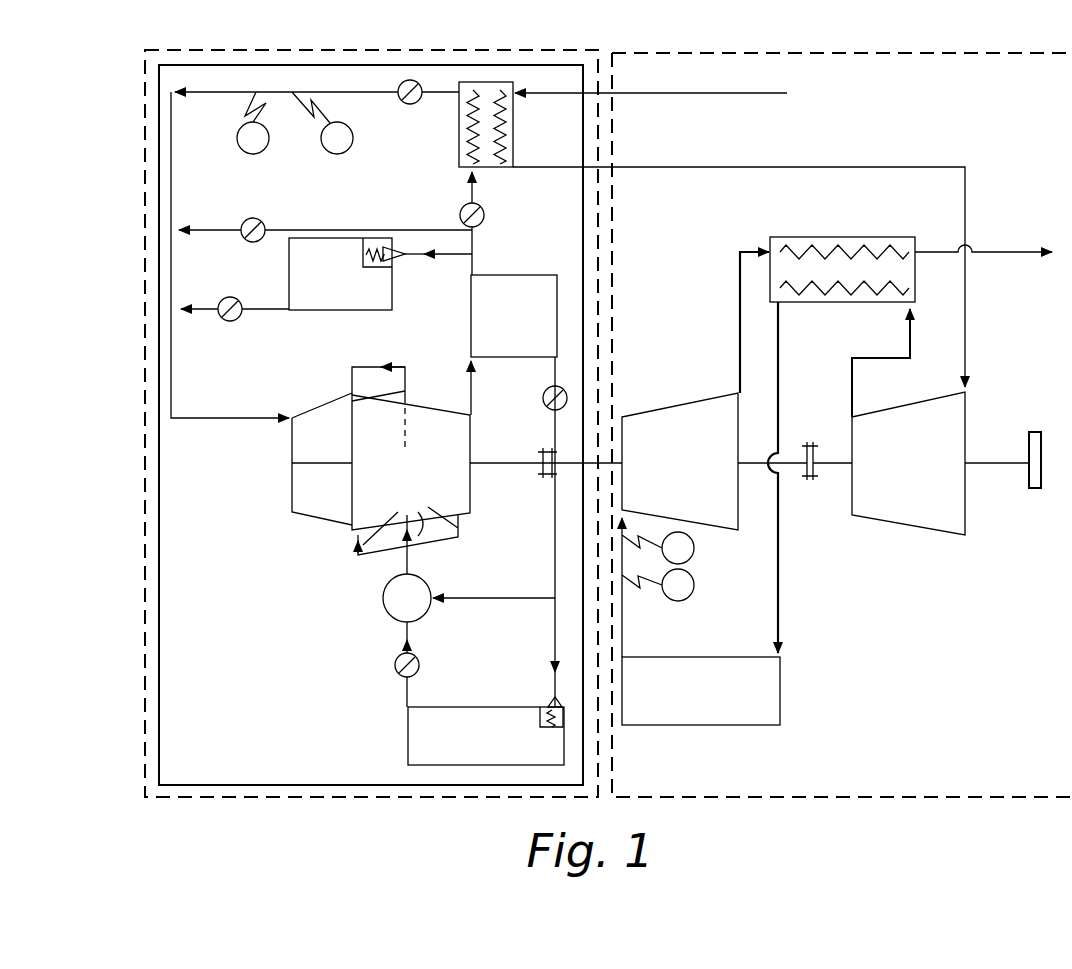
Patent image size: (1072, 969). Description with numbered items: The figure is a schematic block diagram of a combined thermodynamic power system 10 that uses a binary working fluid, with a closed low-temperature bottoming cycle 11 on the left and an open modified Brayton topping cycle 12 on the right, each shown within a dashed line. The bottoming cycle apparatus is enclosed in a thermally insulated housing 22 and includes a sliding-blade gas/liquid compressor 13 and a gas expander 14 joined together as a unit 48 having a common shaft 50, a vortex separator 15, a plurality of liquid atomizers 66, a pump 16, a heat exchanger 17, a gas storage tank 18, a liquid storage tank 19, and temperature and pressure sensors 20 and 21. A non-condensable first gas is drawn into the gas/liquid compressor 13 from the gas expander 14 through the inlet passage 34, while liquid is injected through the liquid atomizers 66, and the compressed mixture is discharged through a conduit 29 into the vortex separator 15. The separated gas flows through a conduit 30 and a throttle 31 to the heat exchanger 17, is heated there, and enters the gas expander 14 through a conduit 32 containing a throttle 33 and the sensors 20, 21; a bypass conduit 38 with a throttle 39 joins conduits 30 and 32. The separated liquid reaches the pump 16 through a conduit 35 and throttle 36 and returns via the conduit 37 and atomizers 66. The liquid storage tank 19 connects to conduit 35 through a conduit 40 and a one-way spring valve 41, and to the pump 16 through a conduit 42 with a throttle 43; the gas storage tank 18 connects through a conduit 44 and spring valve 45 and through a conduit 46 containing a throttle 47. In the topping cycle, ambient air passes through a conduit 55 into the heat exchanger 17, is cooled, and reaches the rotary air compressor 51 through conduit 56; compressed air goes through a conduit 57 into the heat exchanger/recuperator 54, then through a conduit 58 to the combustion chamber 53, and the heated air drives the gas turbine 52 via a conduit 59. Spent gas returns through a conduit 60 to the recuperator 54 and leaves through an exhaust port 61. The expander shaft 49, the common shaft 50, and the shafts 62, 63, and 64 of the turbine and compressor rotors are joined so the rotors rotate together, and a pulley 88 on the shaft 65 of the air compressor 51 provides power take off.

The combined thermodynamic power system 10 is at (608, 399).
The closed low-temperature bottoming cycle 11 is at (337, 47).
The open modified Brayton topping cycle 12 is at (840, 49).
The sliding-blade gas/liquid compressor 13 is at (479, 431).
The gas expander 14 is at (290, 486).
The vortex separator 15 is at (502, 273).
The pump 16 is at (383, 596).
The heat exchanger 17 is at (512, 168).
The gas storage tank 18 is at (322, 313).
The liquid storage tank 19 is at (404, 745).
The temperature sensor 20 is at (240, 152).
The pressure sensor 21 is at (323, 150).
The thermally insulated housing 22 is at (392, 63).
The conduit 29 is at (466, 388).
The conduit 30 is at (471, 185).
The throttle 31 is at (460, 215).
The conduit 32 is at (171, 359).
The throttle 33 is at (407, 105).
The compressor inlet line 34 is at (351, 368).
The conduit 35 is at (553, 515).
The throttle 36 is at (543, 404).
The conduit 37 is at (410, 558).
The bypass conduit 38 is at (318, 229).
The throttle 39 is at (243, 219).
The conduit 40 is at (553, 615).
The one-way spring valve 41 is at (552, 703).
The conduit 42 is at (405, 697).
The throttle 43 is at (398, 657).
The conduit 44 is at (452, 258).
The one-way spring valve 45 is at (398, 258).
The conduit 46 is at (272, 308).
The throttle 47 is at (225, 299).
The gas/liquid compressor and gas expander unit 48 is at (330, 536).
The expander shaft 49 is at (305, 462).
The common shaft 50 is at (493, 470).
The rotary air compressor 51 is at (973, 414).
The gas turbine 52 is at (672, 403).
The combustion chamber 53 is at (793, 696).
The heat exchanger/recuperator 54 is at (787, 235).
The conduit 55 is at (655, 95).
The conduit 56 is at (810, 167).
The conduit 57 is at (850, 380).
The conduit 58 is at (781, 590).
The conduit 59 is at (624, 625).
The conduit 60 is at (737, 325).
The exhaust port 61 is at (998, 256).
The shaft 62 is at (575, 464).
The shaft 63 is at (757, 460).
The shaft 64 is at (838, 455).
The shaft 65 is at (972, 458).
The liquid atomizers 66 is at (432, 518).
The pulley 88 is at (1022, 480).